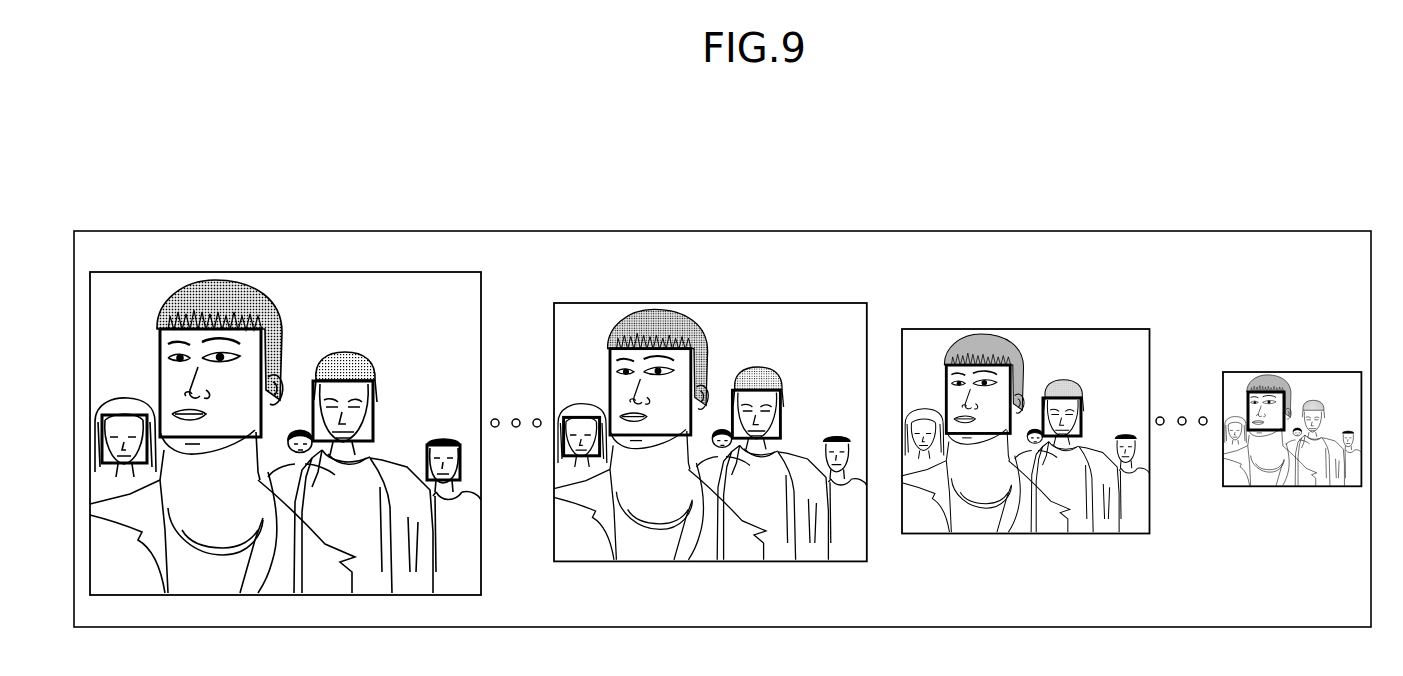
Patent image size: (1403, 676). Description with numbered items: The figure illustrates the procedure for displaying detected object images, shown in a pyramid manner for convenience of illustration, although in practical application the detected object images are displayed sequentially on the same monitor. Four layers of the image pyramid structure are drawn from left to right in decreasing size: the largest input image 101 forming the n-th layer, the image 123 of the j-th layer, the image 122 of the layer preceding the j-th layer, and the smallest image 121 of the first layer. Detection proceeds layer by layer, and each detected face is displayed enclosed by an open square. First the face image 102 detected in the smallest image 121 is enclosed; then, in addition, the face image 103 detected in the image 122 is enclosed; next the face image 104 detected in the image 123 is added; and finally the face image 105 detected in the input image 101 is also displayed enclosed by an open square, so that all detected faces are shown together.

The input image 101 is at (270, 272).
The image of the j-th layer 123 is at (710, 303).
The image of the (j−1)-th layer 122 is at (1020, 329).
The smallest image 121 is at (1268, 372).
The face image 105 is at (462, 445).
The face image 104 is at (563, 421).
The face image 103 is at (1080, 418).
The face image 102 is at (1247, 402).